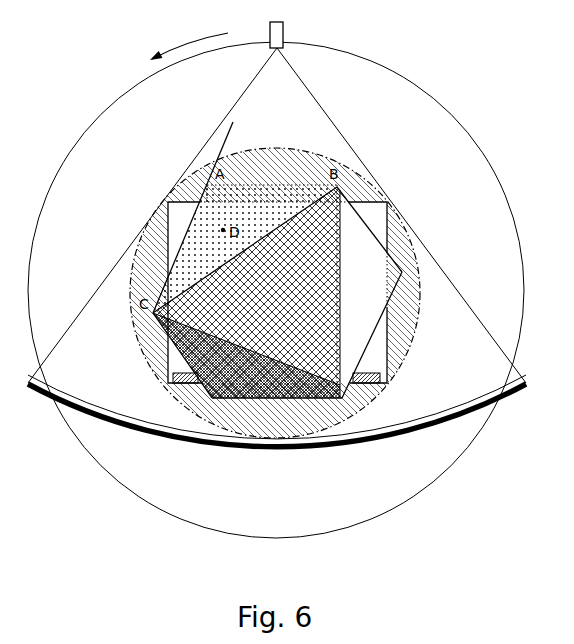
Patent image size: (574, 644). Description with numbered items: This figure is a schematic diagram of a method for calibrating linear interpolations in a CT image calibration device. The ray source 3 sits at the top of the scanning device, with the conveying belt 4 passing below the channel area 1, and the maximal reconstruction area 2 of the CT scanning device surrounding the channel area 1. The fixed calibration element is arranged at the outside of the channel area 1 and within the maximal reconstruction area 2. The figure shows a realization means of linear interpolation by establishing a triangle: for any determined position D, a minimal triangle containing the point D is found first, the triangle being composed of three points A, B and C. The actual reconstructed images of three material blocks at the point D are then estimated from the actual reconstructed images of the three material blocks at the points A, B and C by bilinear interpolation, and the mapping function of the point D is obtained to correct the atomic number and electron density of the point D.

The channel area 1 is at (177, 220).
The maximal reconstruction area 2 is at (420, 327).
The ray source 3 is at (283, 29).
The conveying belt 4 is at (353, 383).